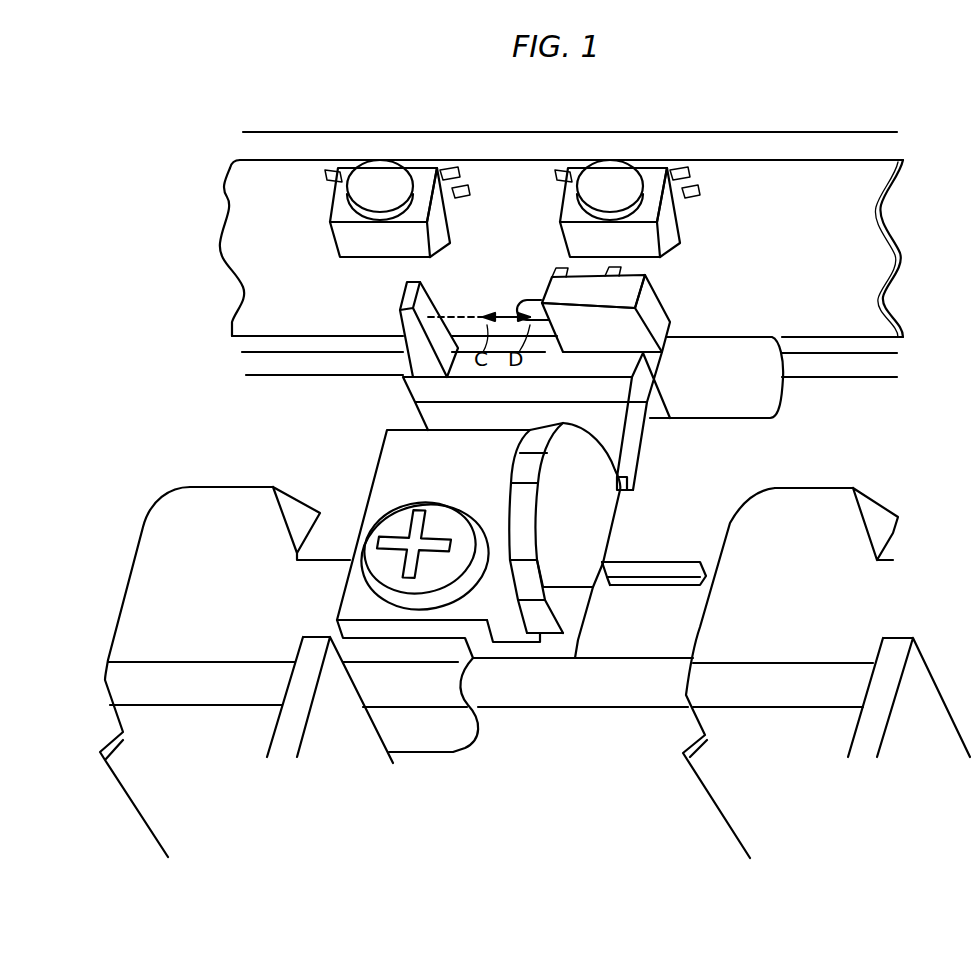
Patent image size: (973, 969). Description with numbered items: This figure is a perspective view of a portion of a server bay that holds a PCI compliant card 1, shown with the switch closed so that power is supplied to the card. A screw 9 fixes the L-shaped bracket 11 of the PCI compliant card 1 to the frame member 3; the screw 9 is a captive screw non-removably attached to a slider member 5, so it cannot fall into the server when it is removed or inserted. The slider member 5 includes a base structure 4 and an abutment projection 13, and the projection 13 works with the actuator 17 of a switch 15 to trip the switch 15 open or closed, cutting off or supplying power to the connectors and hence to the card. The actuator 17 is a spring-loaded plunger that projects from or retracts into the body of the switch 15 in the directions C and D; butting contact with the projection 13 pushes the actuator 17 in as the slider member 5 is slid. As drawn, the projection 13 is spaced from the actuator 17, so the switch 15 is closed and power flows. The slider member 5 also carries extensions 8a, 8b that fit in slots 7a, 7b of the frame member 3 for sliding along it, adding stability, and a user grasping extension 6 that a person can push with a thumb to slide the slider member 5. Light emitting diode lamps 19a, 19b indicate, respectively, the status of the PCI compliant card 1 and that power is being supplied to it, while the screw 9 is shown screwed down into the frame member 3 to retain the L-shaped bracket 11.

The PCI compliant card 1 is at (262, 732).
The frame member 3 is at (888, 416).
The base structure 4 is at (398, 460).
The slider member 5 is at (655, 463).
The user grasping extension 6 is at (592, 510).
The slot 7a is at (639, 582).
The slot 7b is at (762, 402).
The extension 8a is at (605, 562).
The extension 8b is at (662, 408).
The screw 9 is at (396, 517).
The L-shaped bracket 11 is at (455, 727).
The abutment projection 13 is at (423, 300).
The switch 15 is at (658, 297).
The actuator 17 is at (528, 300).
The light emitting diode lamp 19a is at (420, 177).
The light emitting diode lamp 19b is at (650, 177).